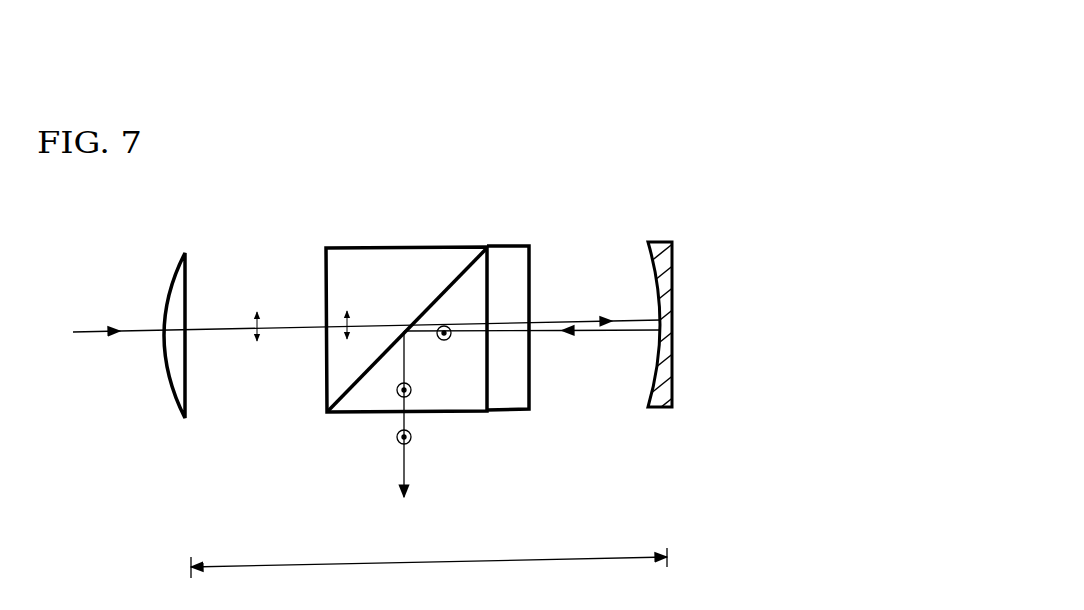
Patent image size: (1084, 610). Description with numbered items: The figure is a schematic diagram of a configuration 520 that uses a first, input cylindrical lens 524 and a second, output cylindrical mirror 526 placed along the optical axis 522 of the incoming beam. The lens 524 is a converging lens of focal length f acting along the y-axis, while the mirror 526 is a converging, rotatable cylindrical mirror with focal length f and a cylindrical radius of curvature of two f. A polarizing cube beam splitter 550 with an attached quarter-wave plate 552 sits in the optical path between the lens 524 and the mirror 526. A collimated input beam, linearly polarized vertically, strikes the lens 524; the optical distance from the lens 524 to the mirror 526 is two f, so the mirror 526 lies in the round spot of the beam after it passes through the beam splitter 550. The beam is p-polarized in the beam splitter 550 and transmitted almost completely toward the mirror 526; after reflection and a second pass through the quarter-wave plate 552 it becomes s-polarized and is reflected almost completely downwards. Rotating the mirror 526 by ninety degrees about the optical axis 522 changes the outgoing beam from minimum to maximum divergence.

The configuration 520 is at (642, 123).
The optical axis 522 is at (138, 333).
The first (input) cylindrical lens 524 is at (185, 251).
The second (output) cylindrical mirror 526 is at (658, 240).
The polarizing cube beam splitter 550 is at (390, 247).
The quarter-wave plate 552 is at (500, 245).